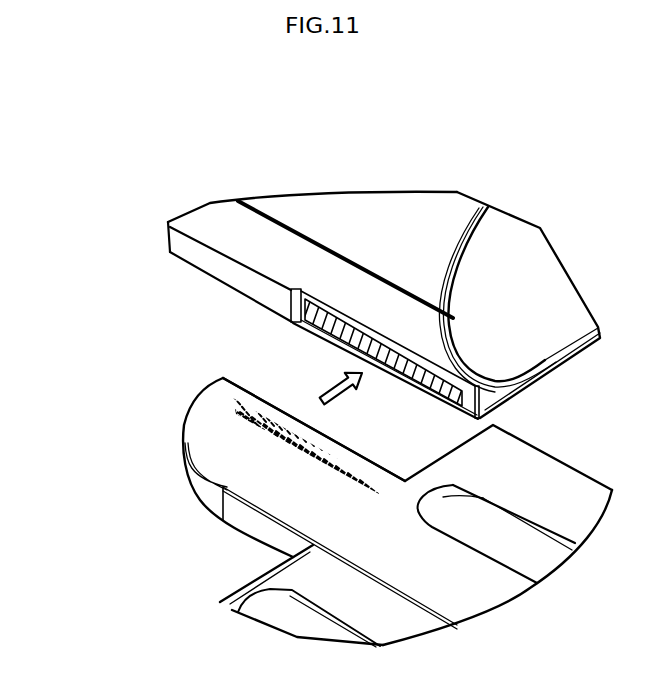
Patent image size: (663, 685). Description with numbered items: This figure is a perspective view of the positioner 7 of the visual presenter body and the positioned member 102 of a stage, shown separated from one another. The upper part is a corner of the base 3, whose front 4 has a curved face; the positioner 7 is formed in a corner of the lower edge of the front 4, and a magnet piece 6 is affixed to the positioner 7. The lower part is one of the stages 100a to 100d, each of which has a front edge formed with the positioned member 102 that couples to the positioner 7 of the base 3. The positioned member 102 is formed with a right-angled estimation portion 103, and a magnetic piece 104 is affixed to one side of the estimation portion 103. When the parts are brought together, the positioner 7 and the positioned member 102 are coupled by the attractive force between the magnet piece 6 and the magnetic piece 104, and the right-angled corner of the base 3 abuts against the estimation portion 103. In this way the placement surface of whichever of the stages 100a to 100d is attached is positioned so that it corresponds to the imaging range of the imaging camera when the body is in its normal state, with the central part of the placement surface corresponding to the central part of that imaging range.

The base 3 is at (530, 243).
The front 4 is at (384, 235).
The magnet piece 6 is at (293, 318).
The positioner 7 is at (470, 398).
The estimation portion 103 is at (422, 480).
The magnetic piece 104 is at (288, 448).
The positioned member 102 is at (248, 470).
The stage 100a is at (329, 512).
The stage 100d is at (292, 572).